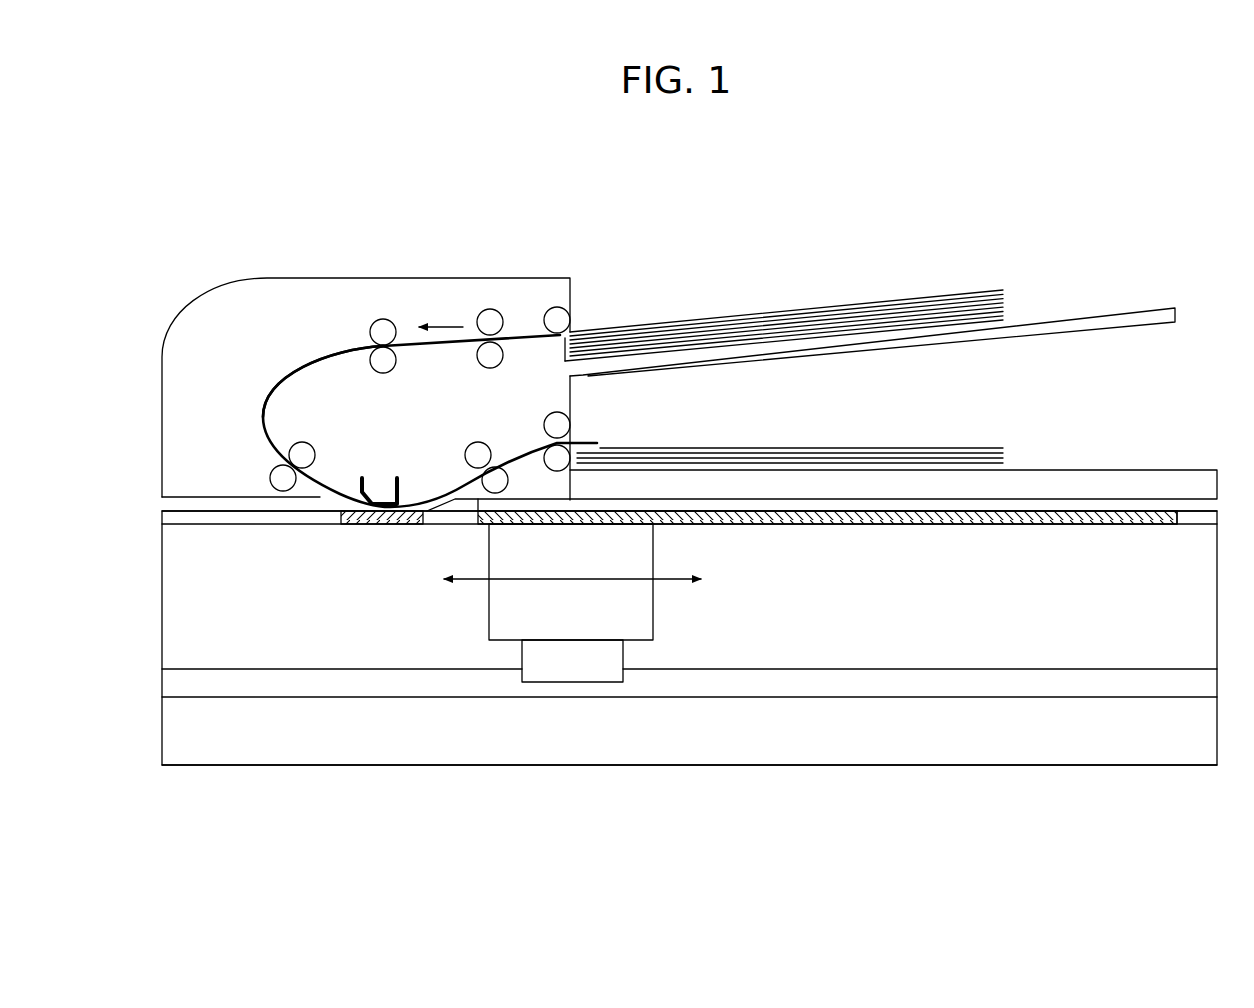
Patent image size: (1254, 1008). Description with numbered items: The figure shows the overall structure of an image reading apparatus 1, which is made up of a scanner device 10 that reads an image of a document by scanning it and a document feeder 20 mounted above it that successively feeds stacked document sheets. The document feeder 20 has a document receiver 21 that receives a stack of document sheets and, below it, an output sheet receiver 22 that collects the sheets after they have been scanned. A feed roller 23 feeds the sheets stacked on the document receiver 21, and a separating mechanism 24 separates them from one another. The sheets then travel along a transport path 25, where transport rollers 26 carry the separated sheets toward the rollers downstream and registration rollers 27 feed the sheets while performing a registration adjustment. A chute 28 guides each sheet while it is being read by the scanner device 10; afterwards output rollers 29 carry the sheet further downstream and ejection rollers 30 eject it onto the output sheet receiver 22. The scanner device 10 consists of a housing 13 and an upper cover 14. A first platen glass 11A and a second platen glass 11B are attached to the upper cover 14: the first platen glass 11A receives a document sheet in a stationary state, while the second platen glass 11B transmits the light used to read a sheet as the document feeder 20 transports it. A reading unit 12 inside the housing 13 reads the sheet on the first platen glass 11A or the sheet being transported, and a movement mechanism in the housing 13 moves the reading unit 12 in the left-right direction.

The image reading apparatus 1 is at (221, 215).
The scanner device 10 is at (814, 795).
The first platen glass 11A is at (951, 525).
The second platen glass 11B is at (365, 525).
The reading unit 12 is at (669, 616).
The housing 13 is at (1082, 767).
The upper cover 14 is at (231, 525).
The document feeder 20 is at (735, 256).
The document receiver 21 is at (890, 346).
The output sheet receiver 22 is at (1108, 470).
The feed roller 23 is at (557, 306).
The separating mechanism 24 is at (490, 309).
The transport path 25 is at (303, 353).
The transport rollers 26 is at (383, 318).
The registration rollers 27 is at (274, 469).
The chute 28 is at (396, 477).
The output rollers 29 is at (469, 446).
The ejection rollers 30 is at (570, 430).